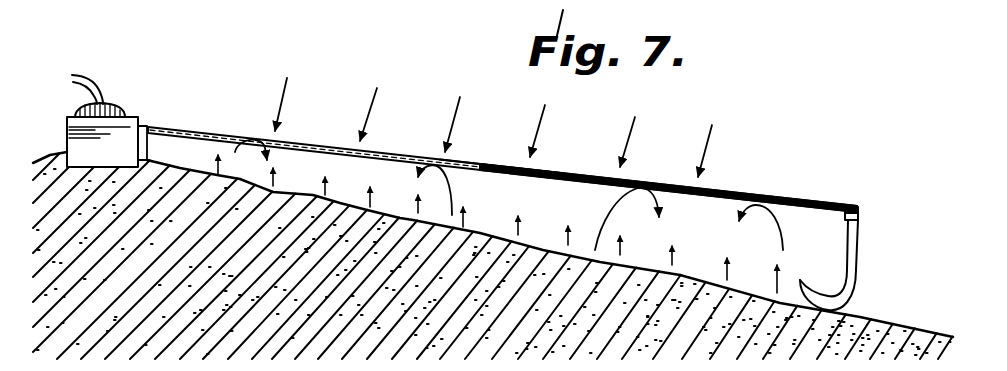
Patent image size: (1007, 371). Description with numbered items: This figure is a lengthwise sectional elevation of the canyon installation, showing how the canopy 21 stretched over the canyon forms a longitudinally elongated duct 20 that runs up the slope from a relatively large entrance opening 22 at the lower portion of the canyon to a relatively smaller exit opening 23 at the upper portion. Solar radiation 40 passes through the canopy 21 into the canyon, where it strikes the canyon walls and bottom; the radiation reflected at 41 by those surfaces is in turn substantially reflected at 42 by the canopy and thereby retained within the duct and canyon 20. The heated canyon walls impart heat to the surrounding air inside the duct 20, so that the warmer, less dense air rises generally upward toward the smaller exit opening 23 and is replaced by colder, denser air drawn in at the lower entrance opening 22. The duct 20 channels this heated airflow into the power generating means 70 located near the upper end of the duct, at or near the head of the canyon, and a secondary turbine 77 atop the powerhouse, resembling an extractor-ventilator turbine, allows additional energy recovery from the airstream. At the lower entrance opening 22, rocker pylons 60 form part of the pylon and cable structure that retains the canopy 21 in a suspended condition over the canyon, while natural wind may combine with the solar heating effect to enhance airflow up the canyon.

The duct 20 is at (502, 189).
The canopy 21 is at (507, 166).
The entrance opening 22 is at (845, 309).
The exit opening 23 is at (139, 150).
The solar radiation 40 is at (370, 111).
The reflected radiation 41 is at (413, 210).
The canopy reflection 42 is at (608, 210).
The rocker pylons 60 is at (857, 251).
The power generating means 70 is at (134, 92).
The secondary turbine 77 is at (72, 87).